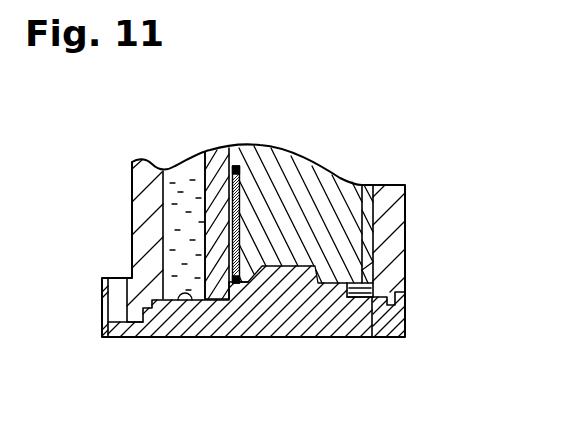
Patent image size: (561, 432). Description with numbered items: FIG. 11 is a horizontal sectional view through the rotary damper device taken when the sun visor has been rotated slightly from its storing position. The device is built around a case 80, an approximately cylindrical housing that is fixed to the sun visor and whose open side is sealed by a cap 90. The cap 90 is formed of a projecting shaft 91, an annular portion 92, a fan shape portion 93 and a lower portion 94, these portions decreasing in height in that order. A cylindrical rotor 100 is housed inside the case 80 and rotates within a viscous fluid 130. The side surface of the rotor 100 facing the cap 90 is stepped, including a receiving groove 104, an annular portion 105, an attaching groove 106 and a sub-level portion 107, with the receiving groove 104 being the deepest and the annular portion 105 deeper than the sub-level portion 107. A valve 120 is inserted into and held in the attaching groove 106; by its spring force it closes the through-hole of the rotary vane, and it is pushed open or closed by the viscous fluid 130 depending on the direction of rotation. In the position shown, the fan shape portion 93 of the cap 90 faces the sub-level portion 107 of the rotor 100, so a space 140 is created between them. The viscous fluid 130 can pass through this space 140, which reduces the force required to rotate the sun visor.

The case 80 is at (135, 240).
The cap 90 is at (241, 340).
The projecting shaft 91 is at (268, 150).
The annular portion 92 is at (322, 175).
The fan shape portion 93 is at (370, 295).
The lower portion 94 is at (173, 340).
The rotor 100 is at (358, 196).
The receiving groove 104 is at (292, 267).
The annular portion 105 is at (340, 278).
The attaching groove 106 is at (203, 152).
The sub-level portion 107 is at (363, 270).
The valve 120 is at (233, 165).
The viscous fluid 130 is at (172, 200).
The space 140 is at (385, 291).